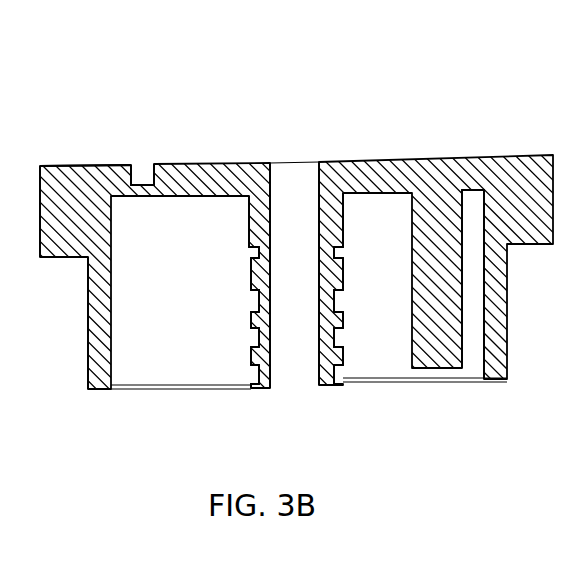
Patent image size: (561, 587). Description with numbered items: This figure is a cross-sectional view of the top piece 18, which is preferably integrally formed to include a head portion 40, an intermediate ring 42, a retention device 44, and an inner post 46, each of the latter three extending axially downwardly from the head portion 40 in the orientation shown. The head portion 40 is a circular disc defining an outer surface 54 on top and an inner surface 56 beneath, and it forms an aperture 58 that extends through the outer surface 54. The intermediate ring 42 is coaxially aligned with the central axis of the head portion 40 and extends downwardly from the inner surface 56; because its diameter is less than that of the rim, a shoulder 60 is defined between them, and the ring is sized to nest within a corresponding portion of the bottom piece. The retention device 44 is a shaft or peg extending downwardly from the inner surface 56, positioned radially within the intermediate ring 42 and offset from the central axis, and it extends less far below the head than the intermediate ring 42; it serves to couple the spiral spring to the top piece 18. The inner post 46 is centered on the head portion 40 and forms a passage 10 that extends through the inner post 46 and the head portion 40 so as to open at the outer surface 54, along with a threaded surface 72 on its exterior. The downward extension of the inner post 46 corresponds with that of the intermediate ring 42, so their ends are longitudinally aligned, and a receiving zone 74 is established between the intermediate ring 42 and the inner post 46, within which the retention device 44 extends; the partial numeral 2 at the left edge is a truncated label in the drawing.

The top piece 18 is at (211, 61).
The head portion 40 is at (390, 165).
The outer surface 54 is at (68, 165).
The aperture 58 is at (150, 163).
The central slot 10 is at (270, 198).
The side wall 2 is at (40, 208).
The inner surface 56 is at (170, 197).
The shoulder 60 is at (60, 258).
The inner post 46 is at (248, 281).
The threaded surface 72 is at (344, 293).
The intermediate ring 42 is at (99, 327).
The retention device 44 is at (449, 356).
The receiving zone 74 is at (143, 322).